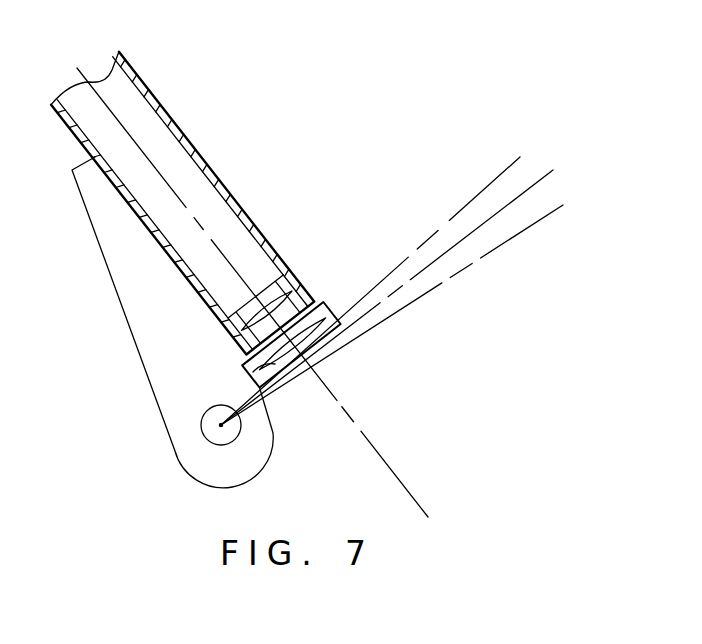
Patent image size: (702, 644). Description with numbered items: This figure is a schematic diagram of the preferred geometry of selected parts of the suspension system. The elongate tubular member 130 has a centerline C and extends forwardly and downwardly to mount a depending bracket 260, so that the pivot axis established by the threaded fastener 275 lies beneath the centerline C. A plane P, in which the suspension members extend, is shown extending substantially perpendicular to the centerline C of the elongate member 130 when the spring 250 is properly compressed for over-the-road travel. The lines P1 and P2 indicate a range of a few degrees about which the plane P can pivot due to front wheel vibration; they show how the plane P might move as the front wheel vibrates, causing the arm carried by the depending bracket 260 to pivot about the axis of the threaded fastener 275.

The elongate tubular member 130 is at (163, 107).
The spring 250 is at (246, 370).
The depending bracket 260 is at (132, 344).
The threaded fastener 275 is at (224, 438).
The plane P is at (542, 181).
The plane pivot range limit P1 is at (455, 213).
The plane pivot range limit P2 is at (528, 231).
The centerline C is at (384, 455).